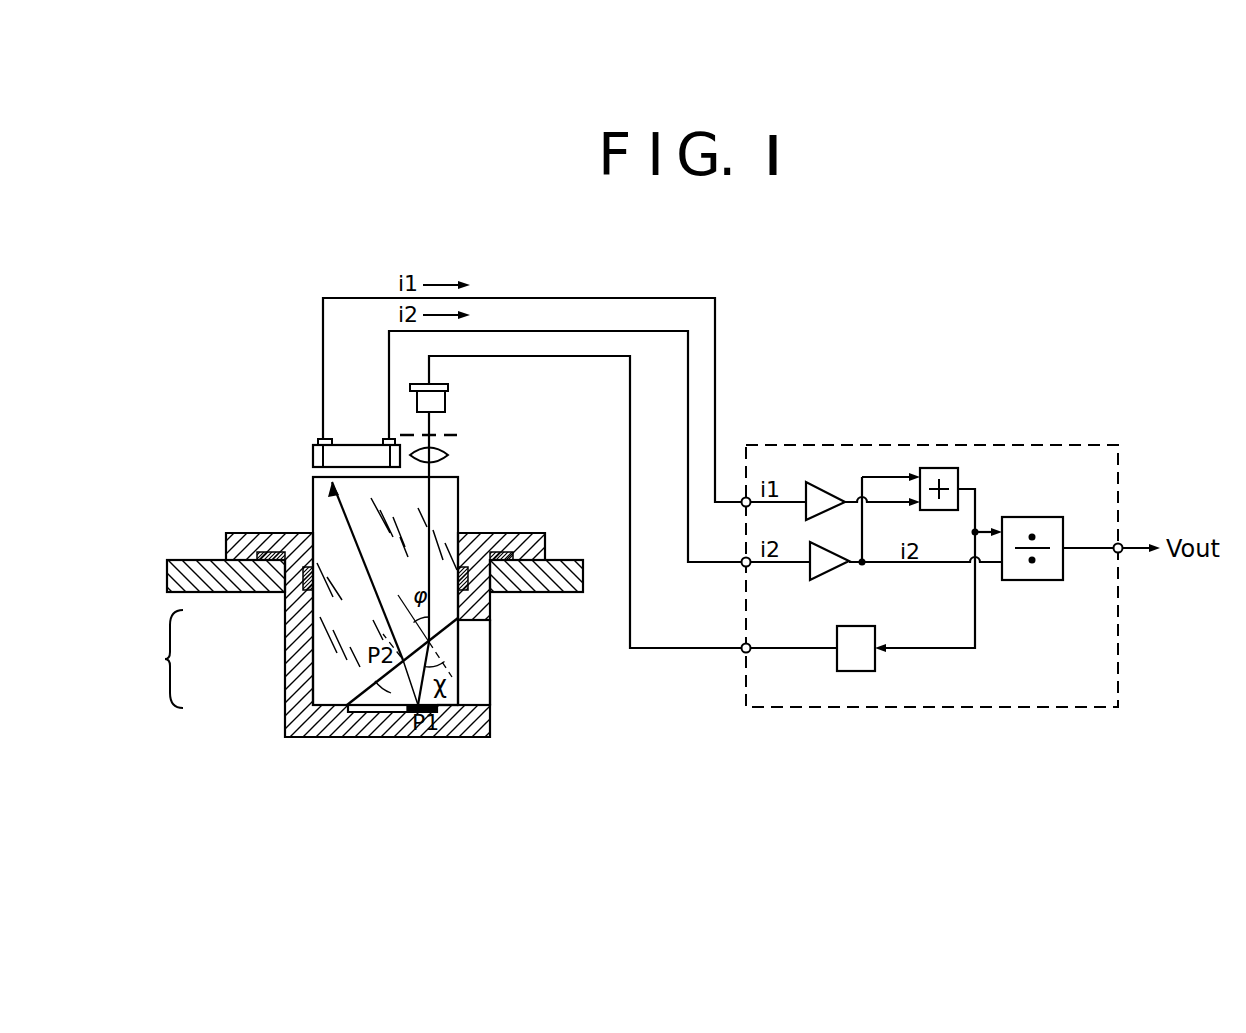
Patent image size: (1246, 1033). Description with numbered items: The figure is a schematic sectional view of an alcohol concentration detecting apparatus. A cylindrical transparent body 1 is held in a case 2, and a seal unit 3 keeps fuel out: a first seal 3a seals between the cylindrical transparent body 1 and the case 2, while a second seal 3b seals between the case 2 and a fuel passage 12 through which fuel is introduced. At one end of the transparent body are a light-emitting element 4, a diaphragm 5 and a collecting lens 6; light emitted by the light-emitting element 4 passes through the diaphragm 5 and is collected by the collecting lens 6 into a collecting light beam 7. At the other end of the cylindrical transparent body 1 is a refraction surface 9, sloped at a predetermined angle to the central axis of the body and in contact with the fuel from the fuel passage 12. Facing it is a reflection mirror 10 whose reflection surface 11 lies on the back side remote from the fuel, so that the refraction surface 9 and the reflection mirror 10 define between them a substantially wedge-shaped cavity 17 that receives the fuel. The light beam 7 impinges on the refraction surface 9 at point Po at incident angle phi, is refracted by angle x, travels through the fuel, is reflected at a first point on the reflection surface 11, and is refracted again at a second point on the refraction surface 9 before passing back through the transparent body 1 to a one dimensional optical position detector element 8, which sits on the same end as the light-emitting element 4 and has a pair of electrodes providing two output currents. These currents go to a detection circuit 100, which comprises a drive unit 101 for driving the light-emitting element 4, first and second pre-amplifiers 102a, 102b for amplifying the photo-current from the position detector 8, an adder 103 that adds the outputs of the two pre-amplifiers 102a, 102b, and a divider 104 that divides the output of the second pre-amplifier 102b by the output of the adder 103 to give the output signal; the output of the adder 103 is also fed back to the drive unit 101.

The cylindrical transparent body 1 is at (338, 683).
The case 2 is at (282, 707).
The seal unit 3 is at (161, 659).
The first seal 3a is at (300, 588).
The second seal 3b is at (248, 592).
The light-emitting element 4 is at (448, 400).
The diaphragm 5 is at (457, 435).
The collecting lens 6 is at (448, 457).
The collecting light beam 7 is at (442, 505).
The one dimensional optical position detector element 8 is at (313, 456).
The refraction surface 9 is at (380, 700).
The reflection mirror 10 is at (412, 713).
The reflection surface 11 is at (448, 714).
The fuel passage 12 is at (478, 663).
The wedge-shaped cavity 17 is at (450, 697).
The detection circuit 100 is at (1216, 655).
The drive unit 101 is at (848, 671).
The first pre-amplifier 102a is at (815, 480).
The second pre-amplifier 102b is at (810, 577).
The adder 103 is at (938, 468).
The divider 104 is at (1040, 517).